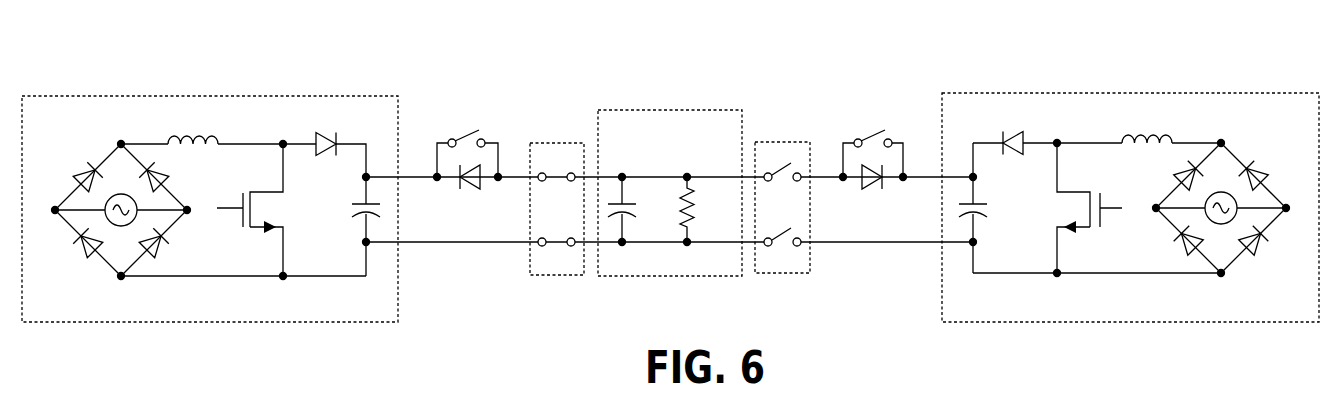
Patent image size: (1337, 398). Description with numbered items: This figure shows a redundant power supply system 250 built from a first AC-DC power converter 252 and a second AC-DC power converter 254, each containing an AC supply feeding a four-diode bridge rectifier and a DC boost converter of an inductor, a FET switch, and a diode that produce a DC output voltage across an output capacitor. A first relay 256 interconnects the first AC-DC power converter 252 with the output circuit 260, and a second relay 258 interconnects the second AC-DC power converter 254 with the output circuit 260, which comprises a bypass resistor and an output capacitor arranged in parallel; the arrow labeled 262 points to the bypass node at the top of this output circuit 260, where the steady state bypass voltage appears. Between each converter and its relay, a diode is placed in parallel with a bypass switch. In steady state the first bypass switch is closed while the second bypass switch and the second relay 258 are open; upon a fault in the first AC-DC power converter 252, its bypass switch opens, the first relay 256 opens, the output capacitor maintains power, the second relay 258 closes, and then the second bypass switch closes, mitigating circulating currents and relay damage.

The redundant power supply system 250 is at (127, 64).
The first AC-DC power converter 252 is at (247, 96).
The second AC-DC power converter 254 is at (1147, 93).
The first relay 256 is at (553, 275).
The second relay 258 is at (783, 273).
The output circuit 260 is at (680, 110).
The bypass node 262 is at (690, 162).